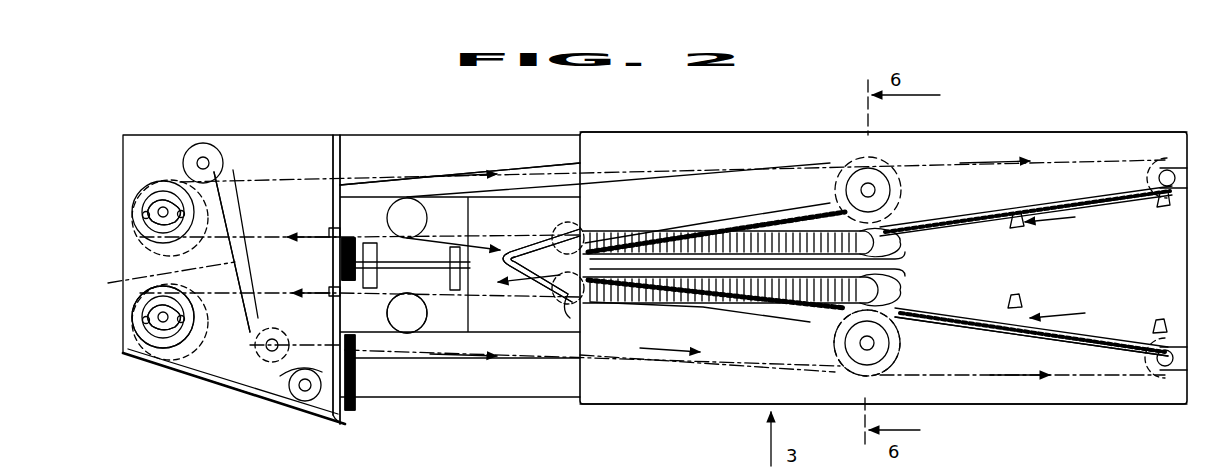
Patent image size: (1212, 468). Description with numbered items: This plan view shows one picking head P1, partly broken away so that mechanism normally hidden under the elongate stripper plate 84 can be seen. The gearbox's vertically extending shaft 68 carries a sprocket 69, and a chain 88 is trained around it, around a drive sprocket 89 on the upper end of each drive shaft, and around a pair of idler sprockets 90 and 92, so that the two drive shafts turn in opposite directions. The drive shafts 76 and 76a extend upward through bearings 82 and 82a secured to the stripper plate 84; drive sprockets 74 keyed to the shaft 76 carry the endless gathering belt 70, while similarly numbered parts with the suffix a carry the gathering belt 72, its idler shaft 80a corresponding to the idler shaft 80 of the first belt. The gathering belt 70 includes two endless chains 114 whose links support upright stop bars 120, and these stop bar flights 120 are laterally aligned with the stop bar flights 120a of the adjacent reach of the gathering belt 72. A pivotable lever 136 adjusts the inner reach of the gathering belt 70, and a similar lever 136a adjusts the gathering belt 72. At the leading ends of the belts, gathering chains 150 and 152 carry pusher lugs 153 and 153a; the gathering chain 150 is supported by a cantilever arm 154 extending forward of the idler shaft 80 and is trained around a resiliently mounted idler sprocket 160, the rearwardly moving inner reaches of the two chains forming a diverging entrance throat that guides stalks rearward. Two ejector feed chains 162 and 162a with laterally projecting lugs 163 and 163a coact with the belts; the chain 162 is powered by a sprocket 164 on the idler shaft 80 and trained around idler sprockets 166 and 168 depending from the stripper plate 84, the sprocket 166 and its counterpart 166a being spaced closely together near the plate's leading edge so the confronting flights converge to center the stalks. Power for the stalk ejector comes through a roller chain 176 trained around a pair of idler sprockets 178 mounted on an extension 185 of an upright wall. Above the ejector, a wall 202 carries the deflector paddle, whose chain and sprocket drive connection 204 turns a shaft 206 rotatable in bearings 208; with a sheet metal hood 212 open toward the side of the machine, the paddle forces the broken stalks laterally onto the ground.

The picking head P1 is at (1084, 106).
The stripper plate 84 is at (358, 142).
The idler sprocket 90 is at (226, 162).
The chain 88 is at (232, 184).
The endless chains 114 is at (230, 290).
The drive shaft 76a is at (161, 210).
The bearing 82a is at (152, 218).
The drive sprocket 89 is at (136, 310).
The drive shaft 76 is at (161, 316).
The bearing 82 is at (152, 326).
The drive sprockets 74 is at (168, 369).
The idler sprocket 92 is at (268, 330).
The sprocket 69 is at (280, 396).
The vertically extending shaft 68 is at (305, 402).
The wall 202 is at (345, 214).
The chain and sprocket drive connection 204 is at (343, 262).
The shaft 206 is at (384, 221).
The bearings 208 is at (456, 248).
The sheet metal hood 212 is at (553, 198).
The idler sprocket 168 is at (427, 313).
The roller chain 176 is at (358, 358).
The idler sprockets 178 is at (358, 395).
The extension 185 is at (341, 419).
The lever 136a is at (793, 133).
The pivotable lever 136 is at (788, 405).
The gathering belt 72 is at (903, 252).
The gathering belt 70 is at (905, 300).
The stop bar flights 120a is at (896, 259).
The stop bar 120 is at (898, 272).
The lugs 163a is at (677, 232).
The lugs 163 is at (628, 295).
The ejector feed chain 162a is at (748, 228).
The ejector feed chain 162 is at (770, 314).
The idler sprocket 166a is at (577, 240).
The idler sprocket 166 is at (577, 332).
The sprocket 164 is at (833, 336).
The idler shaft 80a is at (878, 189).
The idler shaft 80 is at (880, 343).
The gathering chain 152 is at (1068, 205).
The gathering chain 150 is at (1093, 336).
The pusher lugs 153a is at (1163, 206).
The pusher lugs 153 is at (1160, 325).
The cantilever arm 154 is at (1008, 362).
The idler sprocket 160 is at (1137, 362).